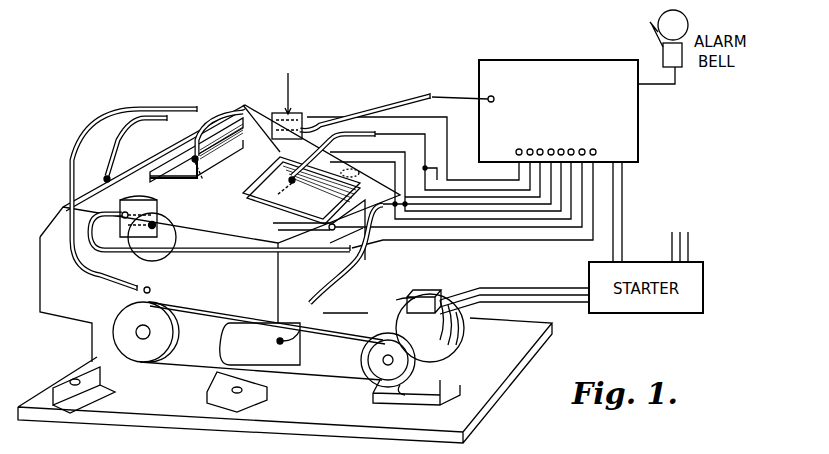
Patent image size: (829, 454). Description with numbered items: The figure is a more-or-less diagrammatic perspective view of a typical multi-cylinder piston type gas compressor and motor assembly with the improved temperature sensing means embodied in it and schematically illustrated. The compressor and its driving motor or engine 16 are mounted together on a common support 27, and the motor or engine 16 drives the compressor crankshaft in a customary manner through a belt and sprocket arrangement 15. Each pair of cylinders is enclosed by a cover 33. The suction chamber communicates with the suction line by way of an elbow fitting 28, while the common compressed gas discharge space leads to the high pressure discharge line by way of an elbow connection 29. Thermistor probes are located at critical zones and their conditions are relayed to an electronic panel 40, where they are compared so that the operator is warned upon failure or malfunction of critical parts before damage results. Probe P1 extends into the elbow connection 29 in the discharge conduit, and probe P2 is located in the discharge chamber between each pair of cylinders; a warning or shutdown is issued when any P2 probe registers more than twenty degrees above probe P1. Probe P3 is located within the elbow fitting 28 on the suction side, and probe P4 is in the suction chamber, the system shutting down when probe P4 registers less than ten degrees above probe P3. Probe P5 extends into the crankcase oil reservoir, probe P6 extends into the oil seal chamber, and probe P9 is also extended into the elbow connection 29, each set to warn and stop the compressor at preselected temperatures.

The belt and sprocket arrangement 15 is at (130, 316).
The motor or engine 16 is at (452, 345).
The common support 27 is at (467, 410).
The elbow fitting 28 is at (303, 118).
The elbow connection 29 is at (168, 256).
The cover 33 is at (183, 172).
The electronic panel 40 is at (516, 60).
The thermistor probe P1 is at (155, 227).
The probe P2 is at (110, 177).
The probe P3 is at (280, 113).
The probe P4 is at (358, 176).
The probe P5 is at (277, 341).
The probe P6 is at (152, 291).
The probe P9 is at (158, 206).